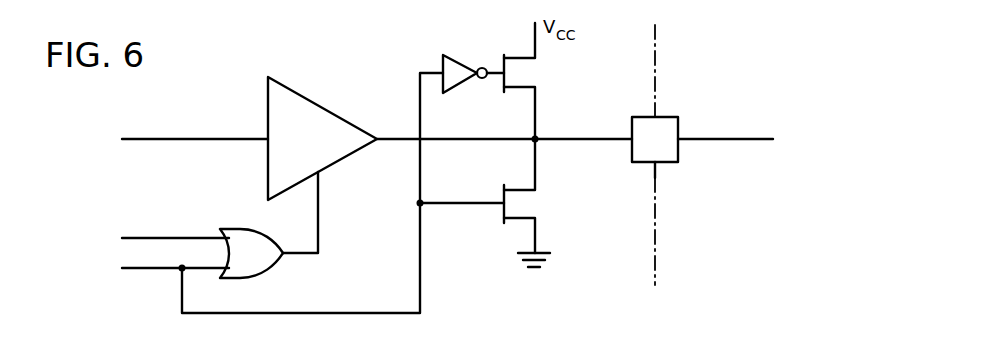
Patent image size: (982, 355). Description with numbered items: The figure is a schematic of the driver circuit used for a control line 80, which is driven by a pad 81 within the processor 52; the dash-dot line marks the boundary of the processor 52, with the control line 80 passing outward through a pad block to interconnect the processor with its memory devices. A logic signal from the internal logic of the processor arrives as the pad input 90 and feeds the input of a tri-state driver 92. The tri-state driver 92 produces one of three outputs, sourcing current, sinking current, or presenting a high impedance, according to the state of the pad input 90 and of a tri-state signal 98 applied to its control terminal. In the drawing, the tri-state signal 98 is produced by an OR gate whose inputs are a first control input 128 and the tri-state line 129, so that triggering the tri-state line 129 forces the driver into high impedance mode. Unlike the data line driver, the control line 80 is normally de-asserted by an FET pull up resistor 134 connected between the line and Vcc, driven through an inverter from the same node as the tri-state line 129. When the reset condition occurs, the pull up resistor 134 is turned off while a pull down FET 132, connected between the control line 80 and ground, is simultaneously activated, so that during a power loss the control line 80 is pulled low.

The pad input 90 is at (148, 139).
The tri-state driver 92 is at (295, 83).
The tri-state signal 98 is at (320, 213).
The first control input 128 is at (157, 238).
The tri-state line 129 is at (130, 272).
The FET pull up resistor 134 is at (548, 77).
The pull down FET 132 is at (543, 183).
The pad 81 is at (558, 228).
The control line 80 is at (703, 139).
The processor 52 is at (663, 58).